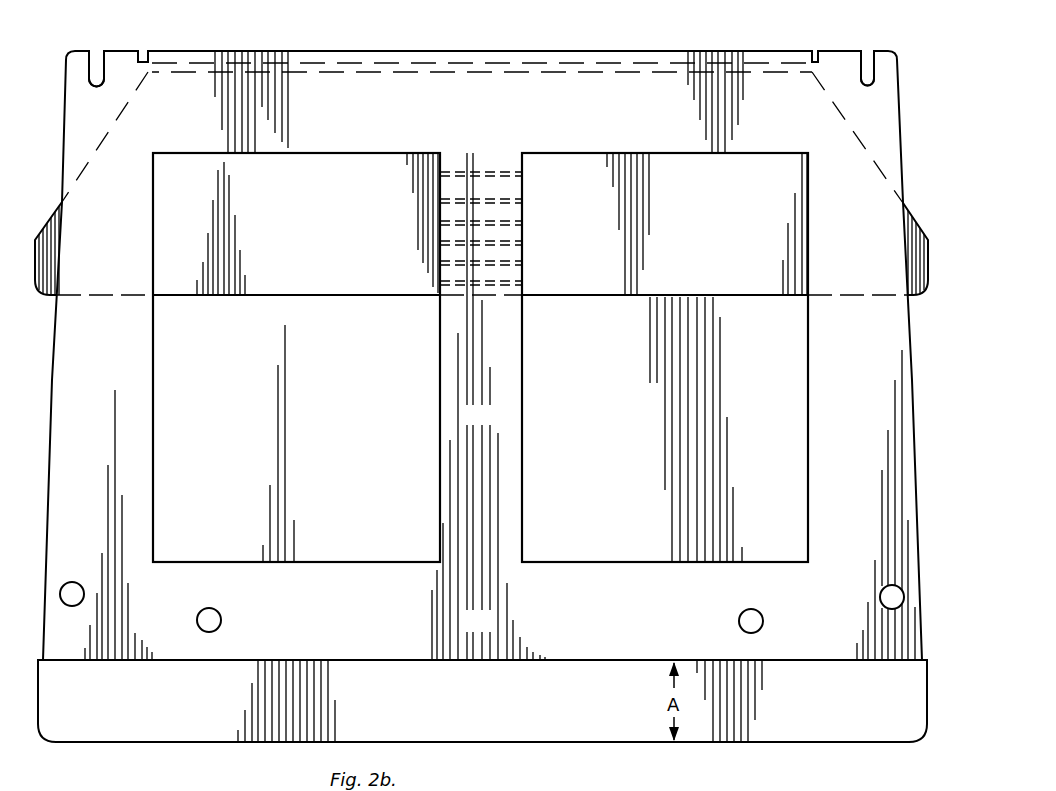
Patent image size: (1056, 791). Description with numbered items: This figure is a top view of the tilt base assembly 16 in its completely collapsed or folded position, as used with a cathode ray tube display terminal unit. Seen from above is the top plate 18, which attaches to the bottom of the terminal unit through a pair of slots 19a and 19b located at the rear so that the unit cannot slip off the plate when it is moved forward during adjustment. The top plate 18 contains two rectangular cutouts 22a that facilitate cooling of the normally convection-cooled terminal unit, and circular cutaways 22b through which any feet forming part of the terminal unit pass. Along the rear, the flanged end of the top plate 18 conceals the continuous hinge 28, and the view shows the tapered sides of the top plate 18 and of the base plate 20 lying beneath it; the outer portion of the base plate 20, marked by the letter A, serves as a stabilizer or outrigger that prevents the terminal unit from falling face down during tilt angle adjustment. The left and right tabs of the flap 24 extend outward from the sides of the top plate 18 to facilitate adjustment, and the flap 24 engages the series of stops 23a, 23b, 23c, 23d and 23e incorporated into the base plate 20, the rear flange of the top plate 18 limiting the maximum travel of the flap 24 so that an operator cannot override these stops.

The tilt base assembly 16 is at (936, 411).
The top plate 18 is at (491, 630).
The slot 19a is at (867, 63).
The slot 19b is at (92, 63).
The base plate 20 is at (492, 712).
The rectangular cutouts 22a is at (399, 433).
The circular cutaways 22b is at (70, 582).
The stop 23a is at (502, 273).
The stop 23b is at (505, 255).
The stop 23c is at (510, 233).
The stop 23d is at (510, 214).
The stop 23e is at (508, 189).
The flap 24 is at (919, 228).
The continuous hinge 28 is at (604, 66).